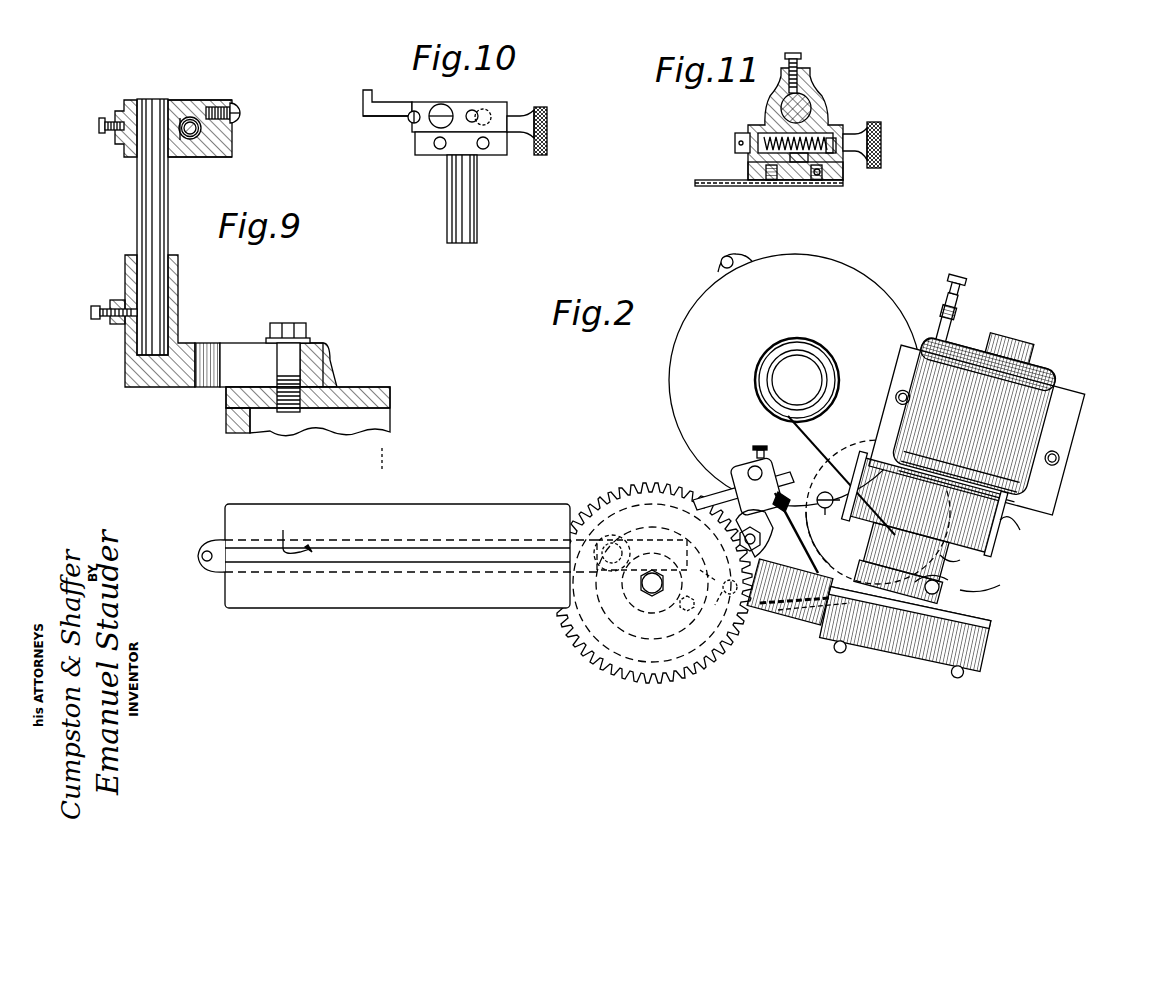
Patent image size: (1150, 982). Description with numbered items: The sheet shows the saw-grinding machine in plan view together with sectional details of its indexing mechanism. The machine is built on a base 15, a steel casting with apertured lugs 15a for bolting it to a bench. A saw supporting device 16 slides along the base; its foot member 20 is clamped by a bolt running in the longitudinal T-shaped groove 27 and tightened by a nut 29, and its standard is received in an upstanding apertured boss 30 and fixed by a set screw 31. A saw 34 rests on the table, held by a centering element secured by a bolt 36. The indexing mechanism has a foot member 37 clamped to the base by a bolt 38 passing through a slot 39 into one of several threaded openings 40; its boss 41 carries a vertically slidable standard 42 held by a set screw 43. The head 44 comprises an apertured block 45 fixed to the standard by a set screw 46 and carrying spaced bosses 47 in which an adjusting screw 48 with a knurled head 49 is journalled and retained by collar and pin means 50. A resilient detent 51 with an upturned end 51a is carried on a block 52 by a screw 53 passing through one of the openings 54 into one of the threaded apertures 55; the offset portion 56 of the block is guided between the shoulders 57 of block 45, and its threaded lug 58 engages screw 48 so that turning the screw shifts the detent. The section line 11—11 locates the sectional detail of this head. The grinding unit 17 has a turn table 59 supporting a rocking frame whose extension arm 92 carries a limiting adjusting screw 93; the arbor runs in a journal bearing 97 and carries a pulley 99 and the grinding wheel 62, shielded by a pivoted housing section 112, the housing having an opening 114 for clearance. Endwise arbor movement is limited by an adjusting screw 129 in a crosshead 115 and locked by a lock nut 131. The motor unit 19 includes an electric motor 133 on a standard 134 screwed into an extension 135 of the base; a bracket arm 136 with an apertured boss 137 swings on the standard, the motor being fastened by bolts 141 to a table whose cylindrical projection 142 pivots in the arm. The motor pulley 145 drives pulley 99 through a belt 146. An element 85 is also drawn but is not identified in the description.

In FIG. 9, the section line 11— 11 is at (110, 127).
In FIG. 9, the base 15 is at (228, 418).
In FIG. 2, the base 15 is at (452, 602).
In FIG. 2, the apertured lugs 15a is at (203, 575).
In FIG. 2, the saw supporting device 16 is at (942, 586).
In FIG. 2, the grinding unit 17 is at (975, 645).
In FIG. 2, the motor unit 19 is at (1045, 380).
In FIG. 2, the foot member 20 is at (582, 645).
In FIG. 2, the T-shaped groove 27 is at (393, 550).
In FIG. 2, the nut 29 is at (588, 545).
In FIG. 2, the upstanding apertured boss 30 is at (690, 566).
In FIG. 2, the set screw 31 is at (718, 586).
In FIG. 2, the saw 34 is at (610, 500).
In FIG. 2, the bolt 36 is at (650, 600).
In FIG. 9, the foot member 37 is at (188, 360).
In FIG. 2, the foot member 37 is at (762, 518).
In FIG. 9, the bolt 38 is at (301, 358).
In FIG. 9, the slot 39 is at (238, 357).
In FIG. 9, the threaded openings 40 is at (302, 393).
In FIG. 2, the threaded openings 40 is at (702, 615).
In FIG. 9, the upstanding apertured boss 41 is at (178, 270).
In FIG. 9, the standard 42 is at (148, 212).
In FIG. 10, the standard 42 is at (466, 210).
In FIG. 11, the standard 42 is at (808, 98).
In FIG. 2, the standard 42 is at (748, 472).
In FIG. 9, the set screw 43 is at (96, 306).
In FIG. 9, the head of the indexing mechanism 44 is at (174, 100).
In FIG. 9, the apertured block 45 is at (120, 110).
In FIG. 11, the apertured block 45 is at (822, 100).
In FIG. 2, the apertured block 45 is at (760, 478).
In FIG. 9, the set screw 46 is at (100, 137).
In FIG. 11, the set screw 46 is at (802, 58).
In FIG. 11, the spaced bosses 47 is at (832, 133).
In FIG. 9, the adjusting screw 48 is at (224, 150).
In FIG. 11, the adjusting screw 48 is at (834, 148).
In FIG. 10, the knurled head 49 is at (548, 114).
In FIG. 11, the knurled head 49 is at (881, 138).
In FIG. 11, the collar and pin retaining means 50 is at (742, 135).
In FIG. 10, the resilient detent 51 is at (376, 112).
In FIG. 11, the resilient detent 51 is at (717, 187).
In FIG. 10, the upturned end 51a is at (366, 92).
In FIG. 2, the upturned end 51a is at (705, 498).
In FIG. 9, the block 52 is at (232, 138).
In FIG. 10, the block 52 is at (497, 155).
In FIG. 11, the block 52 is at (762, 180).
In FIG. 2, the block 52 is at (784, 493).
In FIG. 9, the screw 53 is at (231, 110).
In FIG. 10, the screw 53 is at (445, 105).
In FIG. 11, the screw 53 is at (776, 182).
In FIG. 10, the openings 54 is at (411, 110).
In FIG. 10, the threaded apertures 55 is at (488, 110).
In FIG. 11, the threaded apertures 55 is at (818, 182).
In FIG. 9, the offset portion 56 is at (199, 118).
In FIG. 9, the projecting shoulders 57 is at (192, 117).
In FIG. 9, the apertured lug 58 is at (178, 142).
In FIG. 11, the apertured lug 58 is at (822, 172).
In FIG. 2, the rotatable supporting plate 59 is at (1000, 585).
In FIG. 2, the grinding wheel 62 is at (818, 608).
In FIG. 2, the bracket 85 is at (1040, 512).
In FIG. 2, the extension arm 92 is at (845, 490).
In FIG. 2, the adjusting screw 93 is at (818, 490).
In FIG. 2, the journal bearing 97 is at (945, 572).
In FIG. 2, the pulley 99 is at (832, 508).
In FIG. 2, the pivoted housing section 112 is at (775, 612).
In FIG. 2, the opening 114 is at (940, 590).
In FIG. 2, the crosshead 115 is at (916, 335).
In FIG. 2, the adjusting screw 129 is at (930, 290).
In FIG. 2, the lock nut 131 is at (930, 315).
In FIG. 2, the electric motor 133 is at (1038, 350).
In FIG. 2, the standard 134 is at (768, 400).
In FIG. 2, the extension 135 is at (672, 403).
In FIG. 2, the bracket arm 136 is at (890, 400).
In FIG. 2, the apertured boss 137 is at (760, 395).
In FIG. 2, the bolts 141 is at (1072, 438).
In FIG. 2, the cylindrical projection 142 is at (975, 455).
In FIG. 2, the pulley 145 is at (985, 510).
In FIG. 2, the belt 146 is at (950, 560).